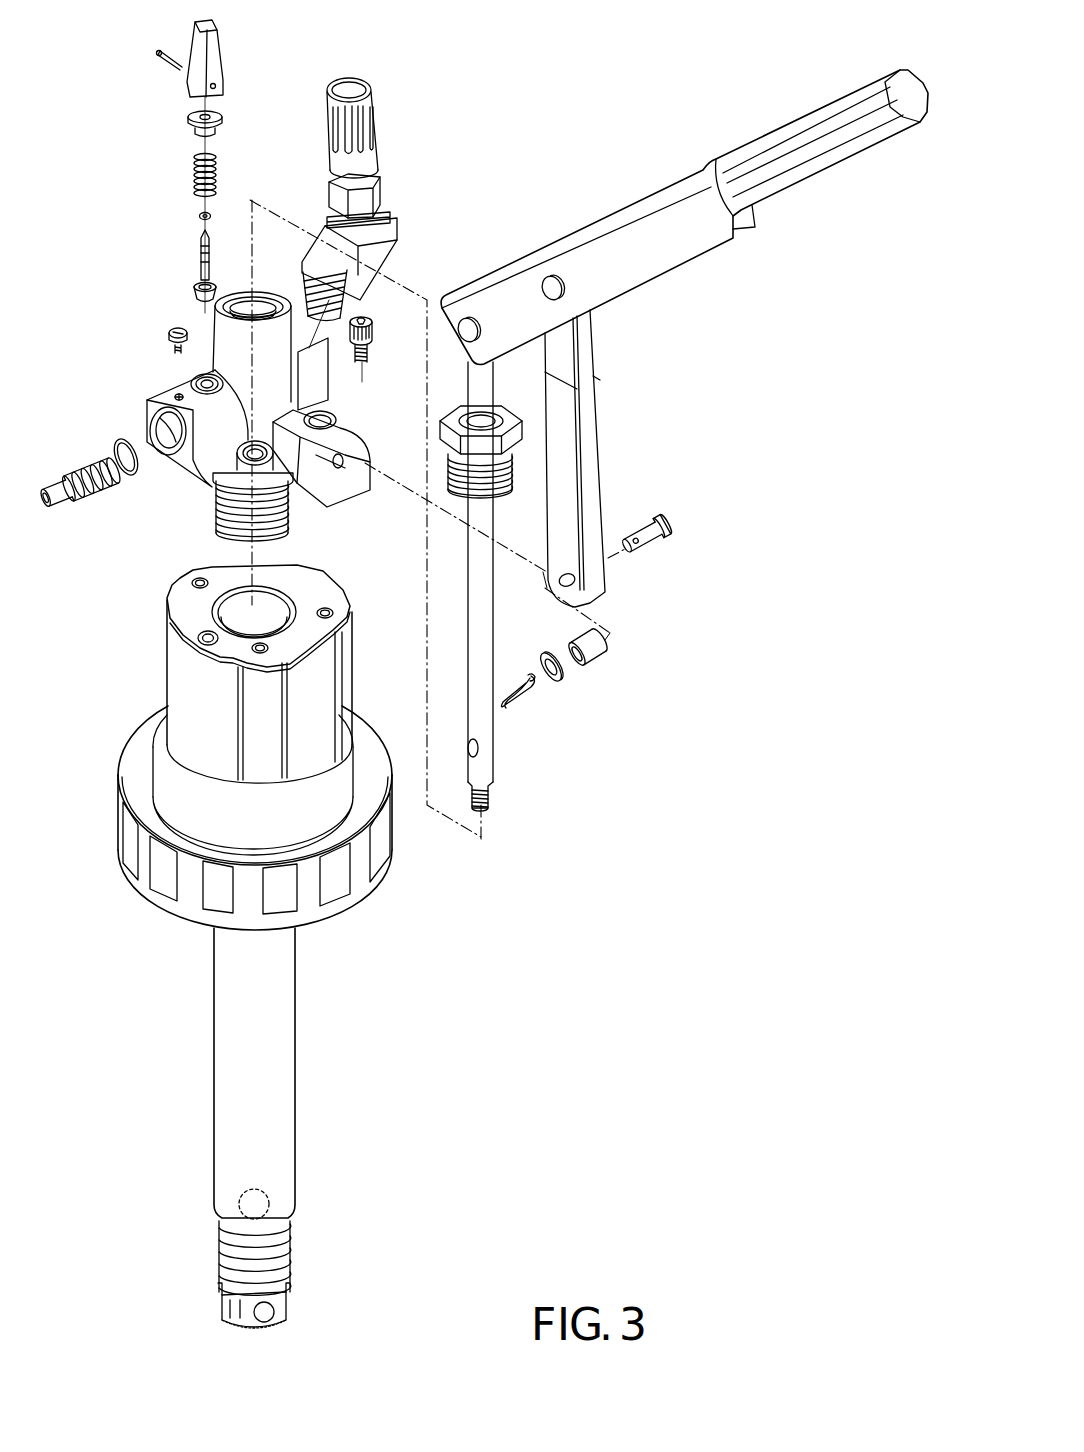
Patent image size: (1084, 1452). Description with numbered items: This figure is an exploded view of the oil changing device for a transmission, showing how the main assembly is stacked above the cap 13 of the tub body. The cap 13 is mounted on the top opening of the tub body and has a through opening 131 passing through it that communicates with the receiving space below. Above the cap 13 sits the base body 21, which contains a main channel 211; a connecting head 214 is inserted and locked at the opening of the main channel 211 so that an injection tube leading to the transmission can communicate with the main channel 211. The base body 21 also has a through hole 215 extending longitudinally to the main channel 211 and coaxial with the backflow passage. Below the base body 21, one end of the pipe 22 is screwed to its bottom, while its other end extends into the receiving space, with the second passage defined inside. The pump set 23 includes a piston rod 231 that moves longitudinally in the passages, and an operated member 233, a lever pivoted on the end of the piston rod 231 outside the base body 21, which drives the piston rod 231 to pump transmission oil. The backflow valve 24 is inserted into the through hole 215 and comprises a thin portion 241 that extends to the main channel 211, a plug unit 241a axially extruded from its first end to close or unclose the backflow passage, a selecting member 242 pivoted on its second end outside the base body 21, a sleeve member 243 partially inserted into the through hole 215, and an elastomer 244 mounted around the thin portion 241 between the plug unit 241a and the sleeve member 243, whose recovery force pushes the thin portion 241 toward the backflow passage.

The cap 13 is at (236, 747).
The through opening 131 is at (207, 637).
The base body 21 is at (218, 416).
The main channel 211 is at (173, 443).
The connecting head 214 is at (98, 493).
The through hole 215 is at (195, 380).
The pipe 22 is at (279, 1045).
The pump set 23 is at (684, 440).
The piston rod 231 is at (484, 733).
The operated member 233 is at (653, 260).
The backflow valve 24 is at (109, 303).
The thin portion 241 is at (200, 268).
The plug unit 241a is at (199, 297).
The selecting member 242 is at (183, 78).
The sleeve member 243 is at (190, 122).
The elastomer 244 is at (197, 183).